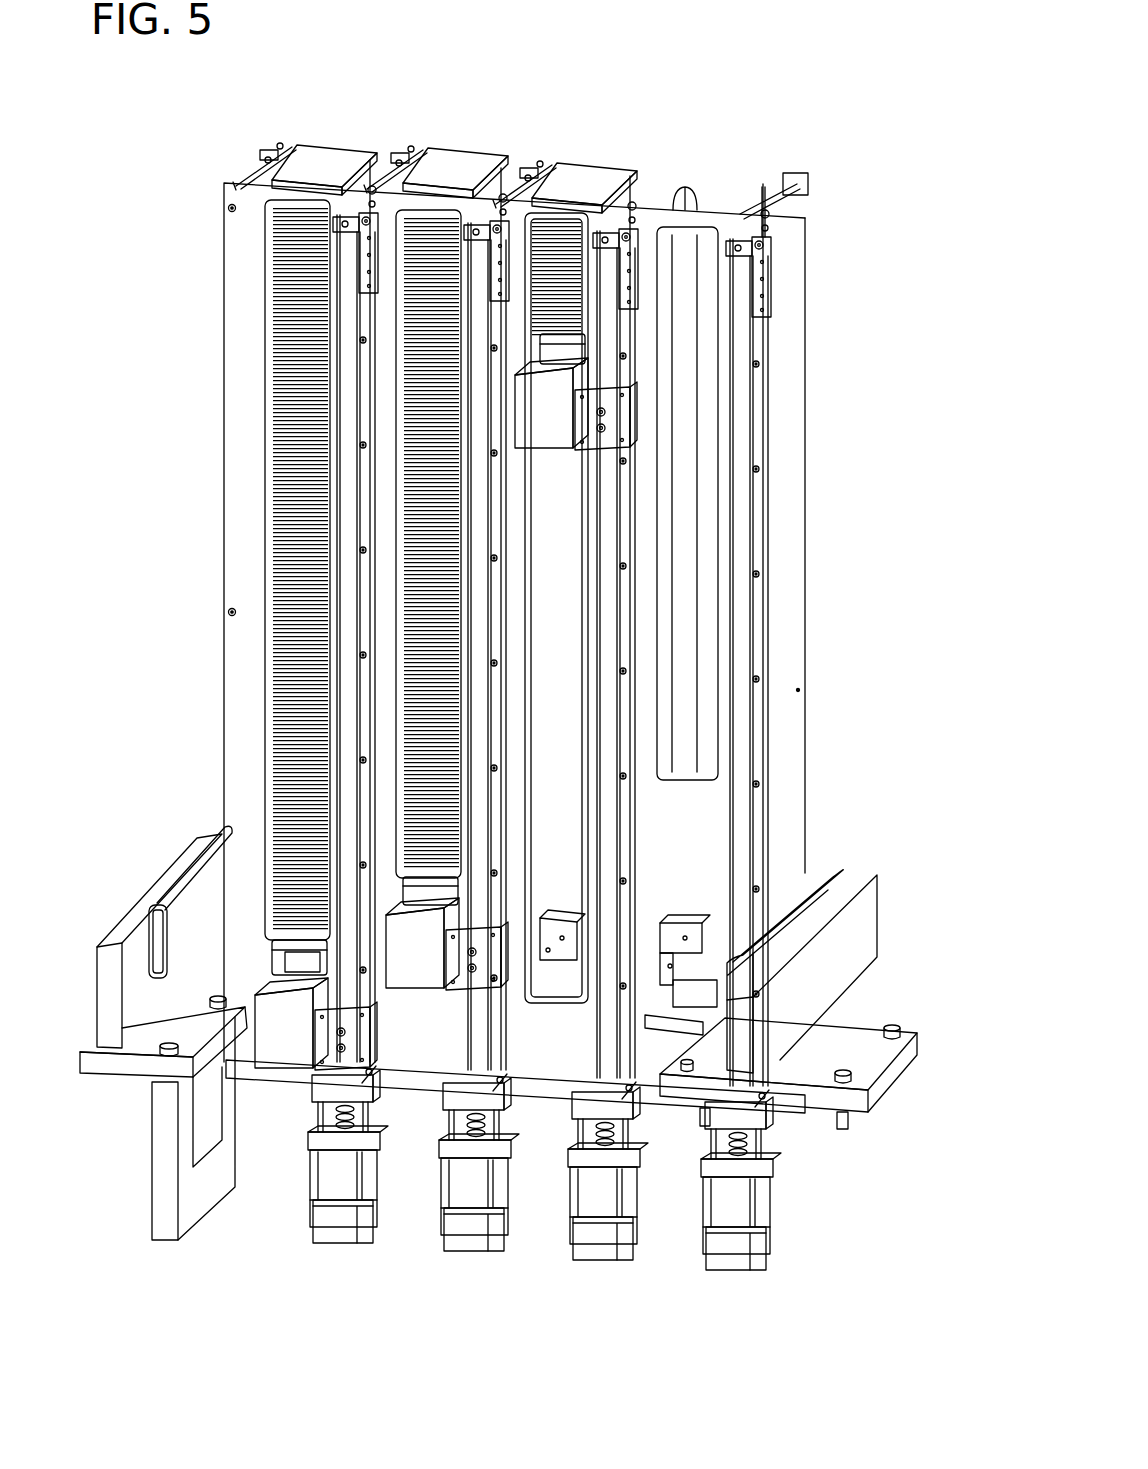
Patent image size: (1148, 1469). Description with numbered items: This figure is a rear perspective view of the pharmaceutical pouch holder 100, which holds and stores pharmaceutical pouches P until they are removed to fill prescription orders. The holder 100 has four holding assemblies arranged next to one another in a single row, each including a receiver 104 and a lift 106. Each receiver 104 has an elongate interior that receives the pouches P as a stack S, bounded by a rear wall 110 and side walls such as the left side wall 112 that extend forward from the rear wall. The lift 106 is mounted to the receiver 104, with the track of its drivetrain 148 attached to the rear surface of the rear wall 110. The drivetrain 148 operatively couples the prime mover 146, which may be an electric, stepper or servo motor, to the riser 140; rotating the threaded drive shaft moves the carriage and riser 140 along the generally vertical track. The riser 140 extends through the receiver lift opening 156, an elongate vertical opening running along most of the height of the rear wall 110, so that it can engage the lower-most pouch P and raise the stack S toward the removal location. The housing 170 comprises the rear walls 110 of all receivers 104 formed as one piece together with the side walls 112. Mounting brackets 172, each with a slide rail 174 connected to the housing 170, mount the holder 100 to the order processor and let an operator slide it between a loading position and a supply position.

The holder 100 is at (878, 106).
The receiver 104 is at (352, 134).
The lift 106 is at (323, 1248).
The rear wall 110 is at (238, 650).
The left side wall 112 is at (795, 680).
The riser 140 is at (566, 460).
The prime mover 146 is at (330, 1195).
The drivetrain 148 is at (320, 573).
The receiver lift opening 156 is at (300, 267).
The housing 170 is at (818, 612).
The mounting bracket 172 is at (95, 975).
The slide rail 174 is at (185, 887).
The pharmaceutical pouch P is at (288, 327).
The stack S is at (268, 688).